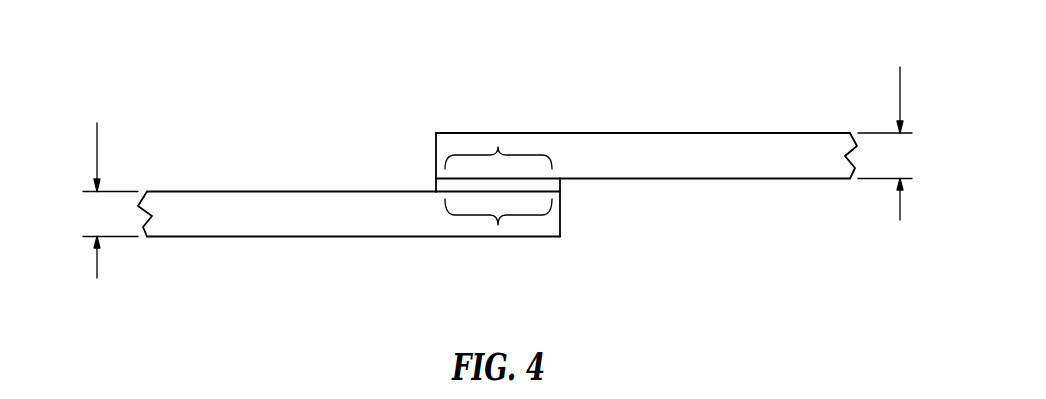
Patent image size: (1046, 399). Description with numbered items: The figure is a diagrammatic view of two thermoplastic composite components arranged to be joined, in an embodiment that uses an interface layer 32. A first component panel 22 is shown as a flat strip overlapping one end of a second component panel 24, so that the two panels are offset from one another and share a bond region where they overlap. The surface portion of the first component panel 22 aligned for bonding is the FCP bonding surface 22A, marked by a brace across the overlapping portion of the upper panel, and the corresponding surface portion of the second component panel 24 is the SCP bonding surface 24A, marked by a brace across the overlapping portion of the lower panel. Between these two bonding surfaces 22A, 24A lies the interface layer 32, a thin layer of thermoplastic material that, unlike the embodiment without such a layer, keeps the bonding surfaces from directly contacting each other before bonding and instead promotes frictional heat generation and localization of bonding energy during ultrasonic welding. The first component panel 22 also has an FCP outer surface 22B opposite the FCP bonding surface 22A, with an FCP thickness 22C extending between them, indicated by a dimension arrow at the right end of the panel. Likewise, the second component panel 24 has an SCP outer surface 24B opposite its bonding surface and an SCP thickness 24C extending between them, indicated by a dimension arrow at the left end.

The first component panel 22 is at (646, 107).
The FCP bonding surface 22A is at (498, 147).
The FCP outer surface 22B is at (723, 133).
The FCP thickness 22C is at (900, 88).
The second component panel 24 is at (349, 269).
The SCP bonding surface 24A is at (498, 225).
The SCP outer surface 24B is at (293, 237).
The SCP thickness 24C is at (97, 147).
The interface layer 32 is at (558, 183).